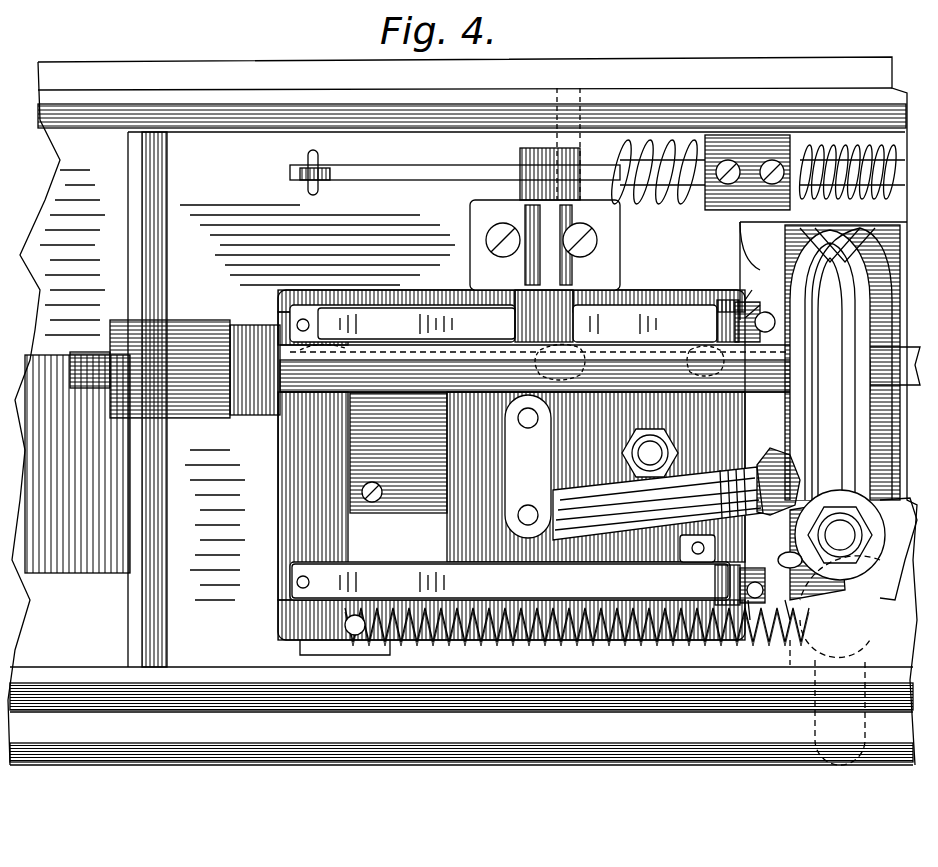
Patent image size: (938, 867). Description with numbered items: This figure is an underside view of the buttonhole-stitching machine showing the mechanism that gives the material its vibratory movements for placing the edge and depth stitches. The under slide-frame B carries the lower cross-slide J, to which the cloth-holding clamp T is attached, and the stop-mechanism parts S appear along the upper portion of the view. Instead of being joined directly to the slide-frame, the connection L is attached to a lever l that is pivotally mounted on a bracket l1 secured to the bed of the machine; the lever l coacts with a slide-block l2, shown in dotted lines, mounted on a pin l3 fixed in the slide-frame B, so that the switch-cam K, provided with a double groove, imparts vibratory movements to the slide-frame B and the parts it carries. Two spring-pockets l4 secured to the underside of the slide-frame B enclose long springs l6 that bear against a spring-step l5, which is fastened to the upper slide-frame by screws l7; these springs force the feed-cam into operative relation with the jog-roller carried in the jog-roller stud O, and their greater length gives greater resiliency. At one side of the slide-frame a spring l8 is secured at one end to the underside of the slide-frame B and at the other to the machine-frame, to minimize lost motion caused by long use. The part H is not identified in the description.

The stop-mechanism parts S is at (852, 205).
The cloth-holding clamp T is at (360, 418).
The under slide-frame B is at (511, 472).
The lower cross-slide J is at (380, 560).
The switch-cam K is at (842, 362).
The arm H is at (775, 452).
The connection L is at (658, 503).
The jog-roller stud O is at (655, 462).
The lever l is at (528, 466).
The bracket l1 is at (545, 271).
The slide-block l2 is at (575, 350).
The pin l3 is at (555, 362).
The spring-pocket l4 is at (510, 452).
The spring-step l5 is at (754, 465).
The spring l6 is at (735, 328).
The screw l7 is at (767, 475).
The spring l8 is at (598, 640).